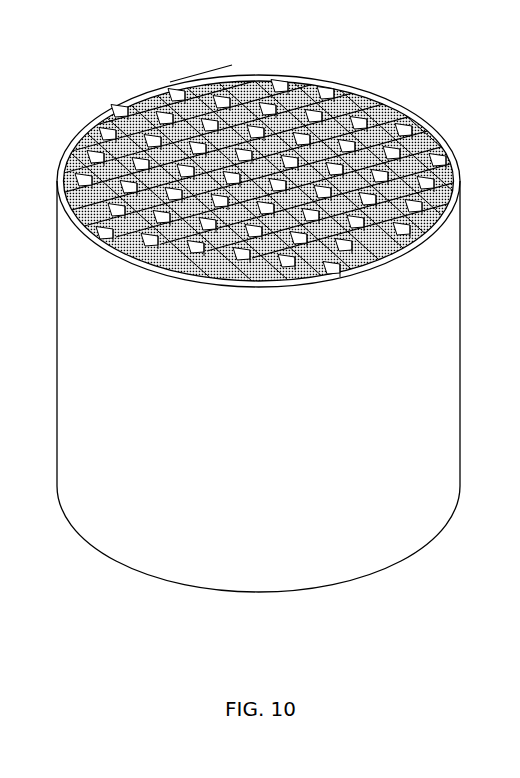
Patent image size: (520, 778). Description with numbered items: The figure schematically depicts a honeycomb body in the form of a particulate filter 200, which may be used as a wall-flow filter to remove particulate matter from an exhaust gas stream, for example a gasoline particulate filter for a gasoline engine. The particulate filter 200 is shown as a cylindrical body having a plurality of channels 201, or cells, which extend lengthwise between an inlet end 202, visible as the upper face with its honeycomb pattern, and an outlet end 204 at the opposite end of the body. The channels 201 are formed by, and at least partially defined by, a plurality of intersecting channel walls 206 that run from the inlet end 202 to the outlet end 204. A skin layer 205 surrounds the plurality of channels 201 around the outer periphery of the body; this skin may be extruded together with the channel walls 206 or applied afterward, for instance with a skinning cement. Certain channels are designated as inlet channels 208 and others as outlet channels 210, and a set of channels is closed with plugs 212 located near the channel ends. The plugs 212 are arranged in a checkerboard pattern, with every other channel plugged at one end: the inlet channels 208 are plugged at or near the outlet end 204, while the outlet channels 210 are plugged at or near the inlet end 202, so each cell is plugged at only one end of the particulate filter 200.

The particulate filter 200 is at (260, 324).
The channels 201 is at (234, 181).
The inlet end 202 is at (274, 177).
The outlet end 204 is at (258, 567).
The skin layer 205 is at (282, 333).
The channel walls 206 is at (302, 80).
The inlet channels 208 is at (155, 92).
The outlet channels 210 is at (121, 104).
The plugs 212 is at (186, 82).